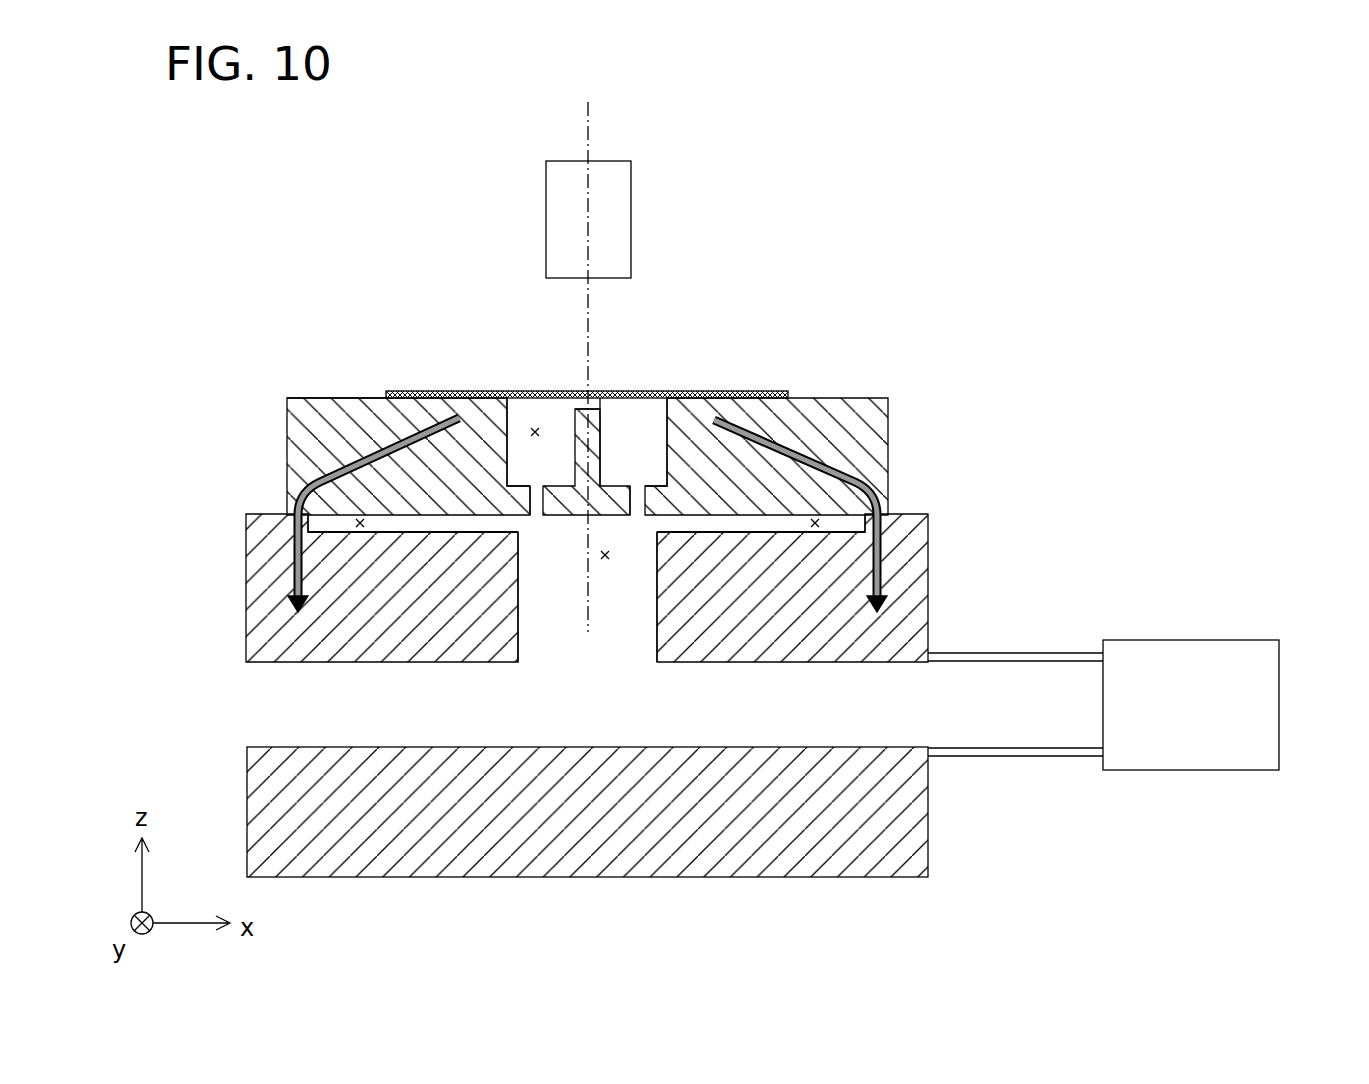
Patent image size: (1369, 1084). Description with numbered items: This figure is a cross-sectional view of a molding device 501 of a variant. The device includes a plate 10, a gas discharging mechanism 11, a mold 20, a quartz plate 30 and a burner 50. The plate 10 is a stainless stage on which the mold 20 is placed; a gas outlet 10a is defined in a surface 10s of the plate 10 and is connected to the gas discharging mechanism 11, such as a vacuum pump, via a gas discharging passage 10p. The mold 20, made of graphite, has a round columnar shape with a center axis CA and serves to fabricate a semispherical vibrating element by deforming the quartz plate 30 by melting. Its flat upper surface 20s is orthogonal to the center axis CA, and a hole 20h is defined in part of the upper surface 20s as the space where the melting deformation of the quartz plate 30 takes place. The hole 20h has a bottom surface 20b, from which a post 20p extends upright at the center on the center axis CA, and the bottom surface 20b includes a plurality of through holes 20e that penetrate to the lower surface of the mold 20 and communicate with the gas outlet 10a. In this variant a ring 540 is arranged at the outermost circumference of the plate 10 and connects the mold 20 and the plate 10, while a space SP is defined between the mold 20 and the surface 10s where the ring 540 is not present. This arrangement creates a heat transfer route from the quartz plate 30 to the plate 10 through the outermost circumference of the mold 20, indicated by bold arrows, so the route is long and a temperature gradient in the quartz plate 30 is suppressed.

The molding device 501 is at (946, 100).
The center axis CA is at (586, 113).
The burner 50 is at (556, 191).
The mold 20 is at (858, 425).
The bottom surface 20b is at (618, 480).
The post 20p is at (580, 408).
The upper surface 20s is at (322, 397).
The hole 20h is at (535, 430).
The through holes 20e is at (530, 501).
The quartz plate 30 is at (410, 391).
The ring 540 is at (273, 523).
The plate 10 is at (905, 581).
The surface 10s is at (417, 532).
The gas outlet 10a is at (605, 557).
The gas discharging passage 10p is at (900, 748).
The gas discharging mechanism 11 is at (1242, 658).
The space SP is at (360, 528).